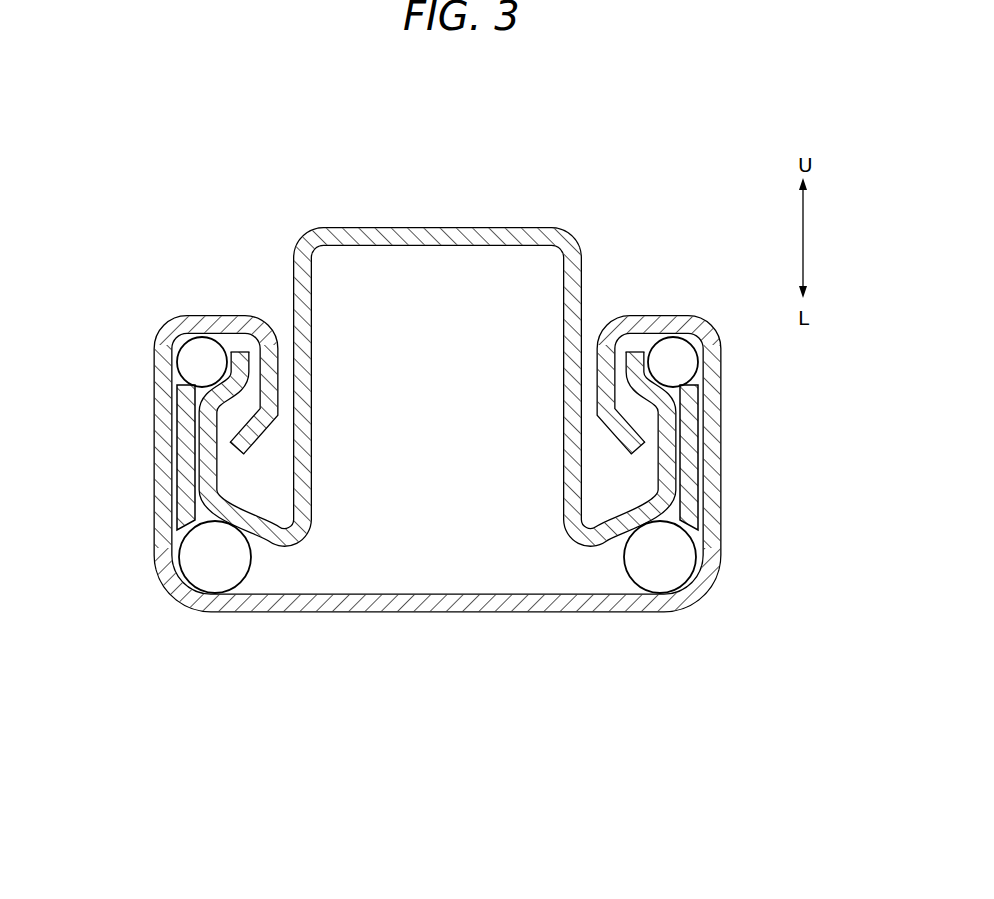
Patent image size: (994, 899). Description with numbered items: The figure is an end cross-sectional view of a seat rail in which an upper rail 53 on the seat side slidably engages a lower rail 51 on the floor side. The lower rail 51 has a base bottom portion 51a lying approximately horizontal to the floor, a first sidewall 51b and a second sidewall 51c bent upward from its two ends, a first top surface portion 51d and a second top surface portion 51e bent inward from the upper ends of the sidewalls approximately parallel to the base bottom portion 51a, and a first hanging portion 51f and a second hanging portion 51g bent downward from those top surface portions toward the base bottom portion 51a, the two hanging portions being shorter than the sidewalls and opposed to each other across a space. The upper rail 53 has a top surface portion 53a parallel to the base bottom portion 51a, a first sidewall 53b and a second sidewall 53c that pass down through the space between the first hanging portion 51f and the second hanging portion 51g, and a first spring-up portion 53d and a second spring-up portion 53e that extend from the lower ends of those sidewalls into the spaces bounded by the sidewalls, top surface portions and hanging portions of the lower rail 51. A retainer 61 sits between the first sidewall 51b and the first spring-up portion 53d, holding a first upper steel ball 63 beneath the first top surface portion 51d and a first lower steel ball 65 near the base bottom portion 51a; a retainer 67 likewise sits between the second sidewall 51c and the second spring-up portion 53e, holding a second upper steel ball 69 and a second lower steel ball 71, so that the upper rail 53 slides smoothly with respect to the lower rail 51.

The lower rail 51 is at (440, 470).
The base bottom portion 51a is at (427, 613).
The first sidewall 51b is at (155, 480).
The second sidewall 51c is at (723, 503).
The first top surface portion 51d is at (222, 315).
The second top surface portion 51e is at (657, 318).
The first hanging portion 51f is at (277, 365).
The second hanging portion 51g is at (605, 373).
The upper rail 53 is at (440, 398).
The top surface portion 53a is at (433, 227).
The first sidewall 53b is at (313, 377).
The second sidewall 53c is at (562, 360).
The first spring-up portion 53d is at (213, 463).
The second spring-up portion 53e is at (660, 462).
The retainer 61 is at (182, 437).
The first upper steel ball 63 is at (192, 352).
The first lower steel ball 65 is at (200, 571).
The retainer 67 is at (693, 447).
The second upper steel ball 69 is at (685, 362).
The second lower steel ball 71 is at (673, 562).